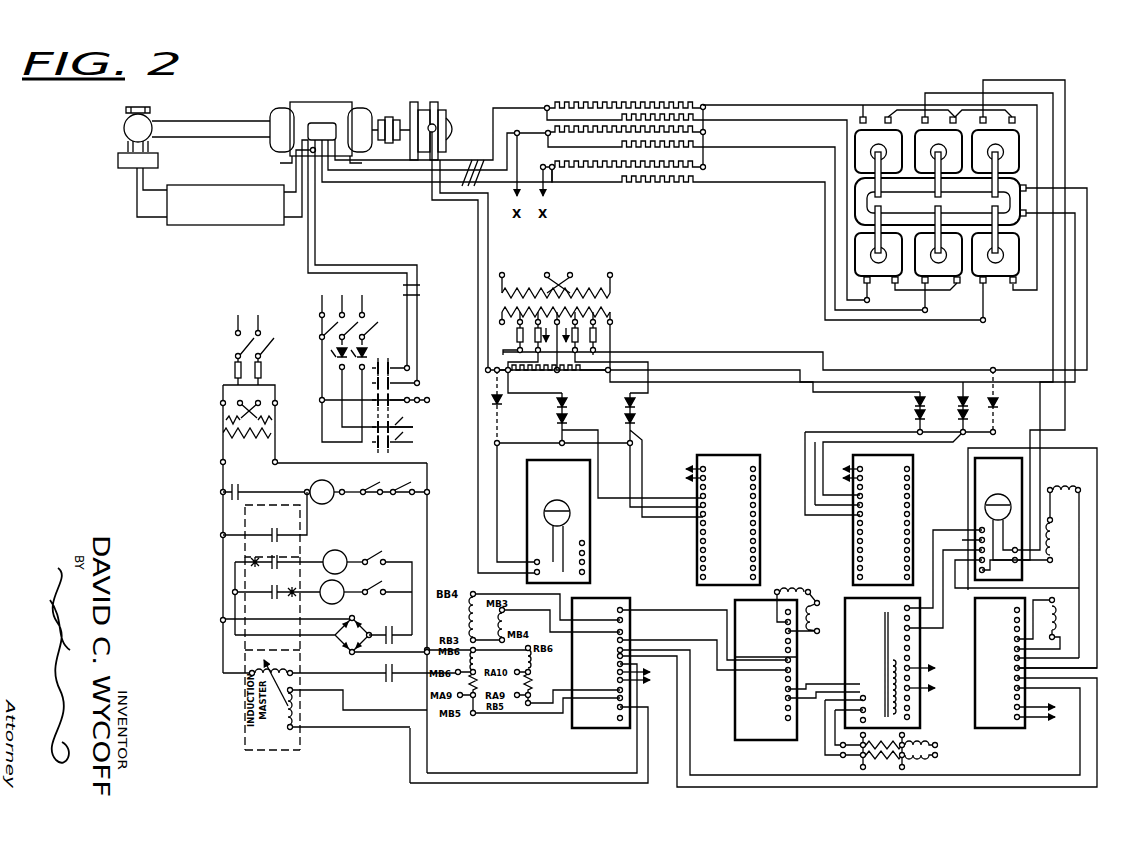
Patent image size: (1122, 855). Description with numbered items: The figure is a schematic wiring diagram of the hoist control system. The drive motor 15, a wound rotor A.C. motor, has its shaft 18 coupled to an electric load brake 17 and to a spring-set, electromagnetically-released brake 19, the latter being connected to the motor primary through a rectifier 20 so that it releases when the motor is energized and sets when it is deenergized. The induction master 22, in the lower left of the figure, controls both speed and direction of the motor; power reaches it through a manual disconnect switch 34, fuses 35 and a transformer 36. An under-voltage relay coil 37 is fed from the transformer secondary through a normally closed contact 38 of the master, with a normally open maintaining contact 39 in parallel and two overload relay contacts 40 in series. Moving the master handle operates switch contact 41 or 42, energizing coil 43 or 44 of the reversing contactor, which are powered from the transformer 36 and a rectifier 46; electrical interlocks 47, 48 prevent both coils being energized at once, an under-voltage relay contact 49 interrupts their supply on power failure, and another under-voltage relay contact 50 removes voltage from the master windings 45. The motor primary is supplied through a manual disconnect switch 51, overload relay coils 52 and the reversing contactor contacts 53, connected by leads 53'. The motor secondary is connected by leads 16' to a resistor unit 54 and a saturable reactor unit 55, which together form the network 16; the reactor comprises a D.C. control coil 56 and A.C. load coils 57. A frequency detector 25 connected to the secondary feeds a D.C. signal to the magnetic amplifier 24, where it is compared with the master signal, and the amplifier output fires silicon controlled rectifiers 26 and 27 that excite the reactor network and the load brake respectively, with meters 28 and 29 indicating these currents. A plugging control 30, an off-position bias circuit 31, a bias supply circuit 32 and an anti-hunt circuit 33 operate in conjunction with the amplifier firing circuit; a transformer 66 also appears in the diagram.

The drive motor 15 is at (334, 120).
The saturable reactor and resistance network 16 is at (794, 61).
The leads 16' is at (477, 164).
The electric load brake 17 is at (442, 106).
The motor shaft 18 is at (382, 117).
The spring-set electromagnetically-released brake 19 is at (124, 122).
The rectifier 20 is at (192, 226).
The induction master controller 22 is at (220, 620).
The magnetic amplifier 24 is at (852, 543).
The frequency detector 25 is at (845, 645).
The silicon controlled rectifier 26 is at (913, 405).
The silicon controlled rectifier 27 is at (648, 412).
The meter 28 is at (985, 508).
The meter 29 is at (571, 516).
The plugging control 30 is at (735, 602).
The off-position bias circuit 31 is at (975, 638).
The bias supply circuit 32 is at (612, 600).
The anti-hunt circuit 33 is at (1067, 482).
The manual disconnect switch 34 is at (232, 340).
The fuses 35 is at (249, 393).
The transformer 36 is at (218, 434).
The under-voltage relay coil 37 is at (334, 484).
The normally closed contact 38 is at (265, 517).
The normally open contact 39 is at (240, 490).
The overload relay contacts 40 is at (395, 480).
The switch contact 41 is at (279, 595).
The switch contact 42 is at (277, 601).
The coil 43 is at (344, 554).
The coil 44 is at (342, 584).
The windings 45 is at (275, 720).
The rectifier 46 is at (364, 629).
The electrical interlock 47 is at (378, 556).
The electrical interlock 48 is at (388, 580).
The under-voltage relay contact 49 is at (390, 625).
The under-voltage relay contact 50 is at (386, 679).
The manual disconnect switch 51 is at (318, 322).
The overload relay coils 52 is at (364, 352).
The contacts 53 is at (401, 400).
The leads 53' is at (430, 279).
The resistor unit 54 is at (705, 103).
The saturable reactor unit 55 is at (858, 100).
The D.C. control coil 56 is at (1020, 180).
The A.C. load coils 57 is at (985, 122).
The transformer 66 is at (621, 298).